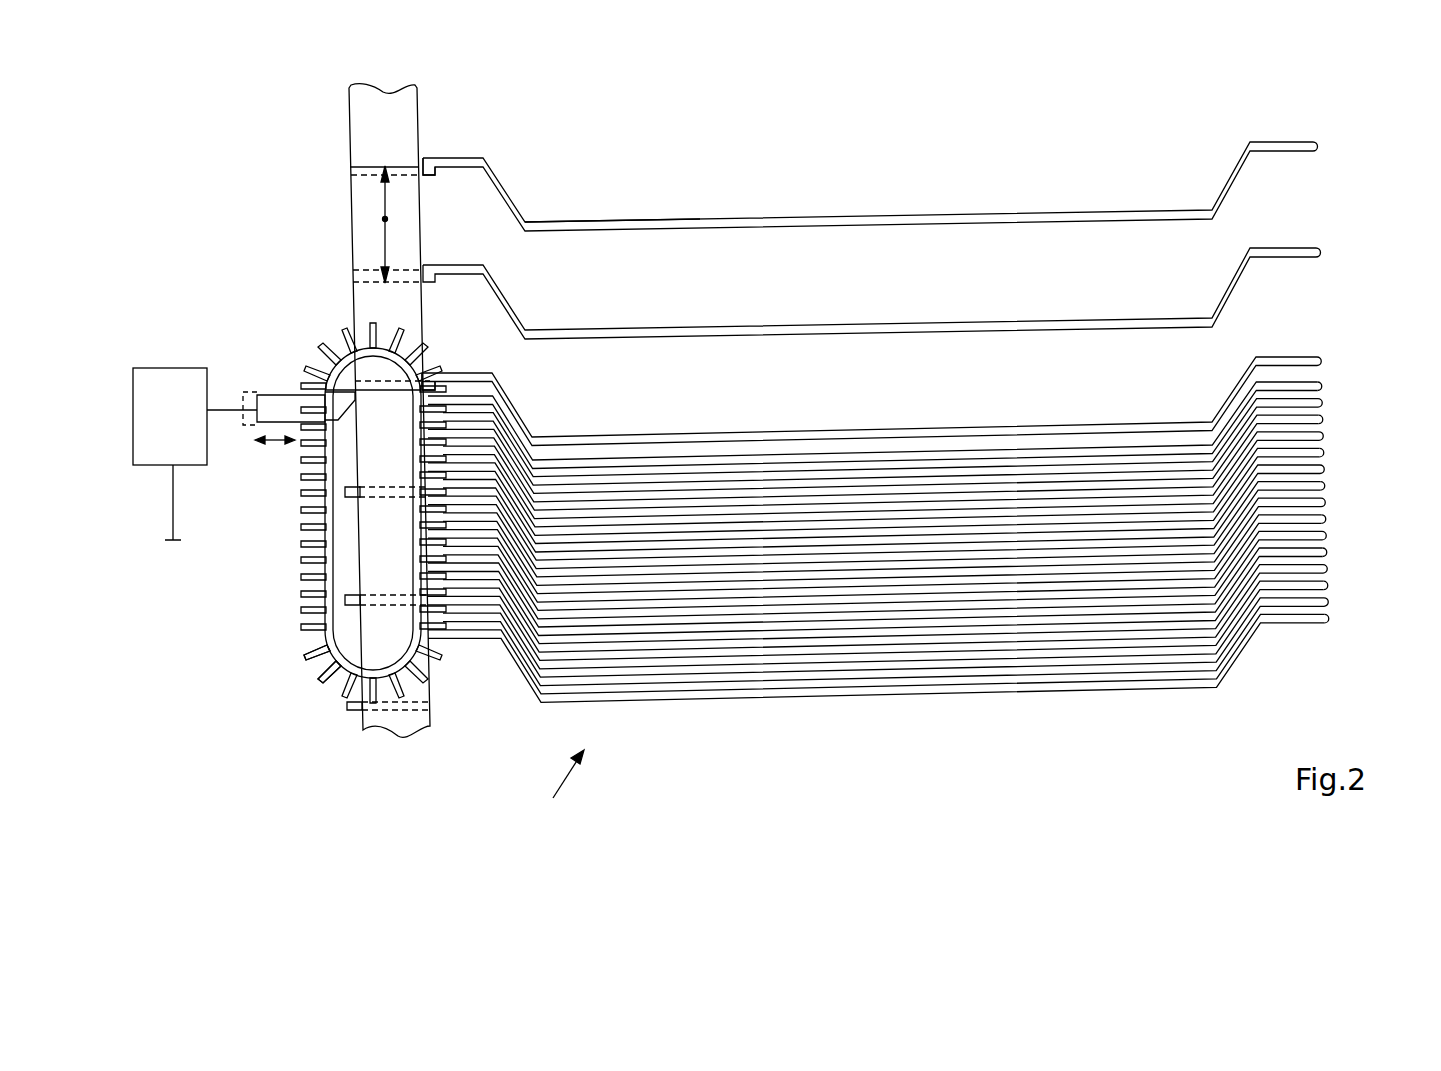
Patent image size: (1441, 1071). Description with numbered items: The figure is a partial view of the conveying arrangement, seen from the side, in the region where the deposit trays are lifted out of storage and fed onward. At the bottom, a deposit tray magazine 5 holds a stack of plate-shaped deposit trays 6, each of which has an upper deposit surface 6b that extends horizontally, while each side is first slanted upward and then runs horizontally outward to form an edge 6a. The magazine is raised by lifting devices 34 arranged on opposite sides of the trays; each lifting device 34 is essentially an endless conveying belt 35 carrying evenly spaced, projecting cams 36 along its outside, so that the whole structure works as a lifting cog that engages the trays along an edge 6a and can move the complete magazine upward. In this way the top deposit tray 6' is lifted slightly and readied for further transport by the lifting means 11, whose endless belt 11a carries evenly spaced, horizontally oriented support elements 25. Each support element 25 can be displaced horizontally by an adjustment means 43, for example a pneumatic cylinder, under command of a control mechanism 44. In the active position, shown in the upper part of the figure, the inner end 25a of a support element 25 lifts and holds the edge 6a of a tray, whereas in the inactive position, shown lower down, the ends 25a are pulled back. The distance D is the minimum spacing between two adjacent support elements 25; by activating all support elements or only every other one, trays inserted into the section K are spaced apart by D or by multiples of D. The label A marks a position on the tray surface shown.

The deposit tray magazine 5 is at (553, 798).
The deposit tray 6 is at (876, 588).
The top deposit tray 6' is at (869, 401).
The edge 6a is at (1318, 403).
The upper deposit surface 6b is at (893, 215).
The lifting means 11 is at (360, 118).
The endless belt 11a is at (372, 219).
The support element 25 is at (360, 167).
The inner end 25a is at (425, 166).
The lifting device 34 is at (302, 508).
The endless conveying belt 35 is at (330, 575).
The projecting cam 36 is at (318, 668).
The adjustment means 43 is at (258, 410).
The control mechanism 44 is at (153, 368).
The position A is at (608, 222).
The minimum spacing D is at (385, 219).
The section K is at (430, 381).